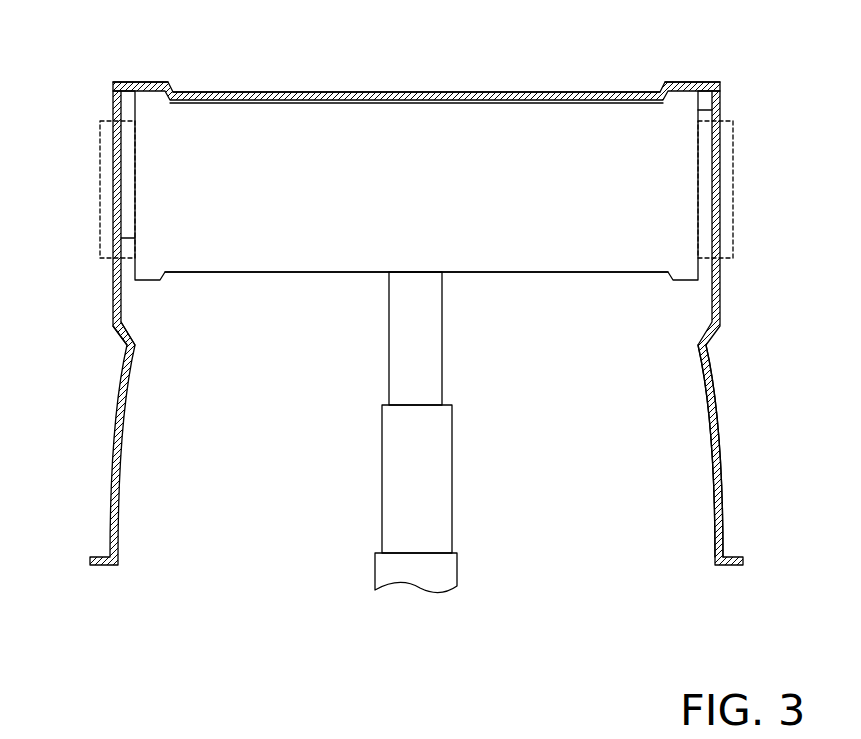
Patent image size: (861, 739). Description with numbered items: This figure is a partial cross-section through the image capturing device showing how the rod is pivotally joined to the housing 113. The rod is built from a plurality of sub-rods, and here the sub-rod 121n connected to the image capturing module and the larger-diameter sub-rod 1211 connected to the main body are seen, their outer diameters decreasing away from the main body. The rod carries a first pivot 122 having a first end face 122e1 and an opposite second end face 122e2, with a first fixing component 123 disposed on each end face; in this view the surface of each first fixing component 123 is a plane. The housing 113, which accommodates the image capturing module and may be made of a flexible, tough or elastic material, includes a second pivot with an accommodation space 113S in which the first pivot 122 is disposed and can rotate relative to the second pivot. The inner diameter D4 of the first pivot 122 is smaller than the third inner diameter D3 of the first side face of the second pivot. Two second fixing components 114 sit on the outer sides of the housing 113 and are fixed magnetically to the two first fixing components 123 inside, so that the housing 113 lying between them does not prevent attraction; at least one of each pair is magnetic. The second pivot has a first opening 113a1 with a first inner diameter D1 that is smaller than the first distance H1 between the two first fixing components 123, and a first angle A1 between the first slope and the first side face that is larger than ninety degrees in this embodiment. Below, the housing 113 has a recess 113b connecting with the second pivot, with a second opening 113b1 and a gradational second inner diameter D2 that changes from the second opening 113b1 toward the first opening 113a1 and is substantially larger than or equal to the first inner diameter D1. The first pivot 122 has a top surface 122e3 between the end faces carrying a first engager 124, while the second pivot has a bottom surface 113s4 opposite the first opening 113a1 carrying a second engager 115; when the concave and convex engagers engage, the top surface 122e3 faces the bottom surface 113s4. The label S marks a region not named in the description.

The housing 113 is at (725, 490).
The recess 113b is at (690, 452).
The second opening 113b1 is at (602, 558).
The first opening 113a1 is at (558, 345).
The accommodation space 113S is at (185, 290).
The bottom surface 113s4 is at (125, 82).
The second fixing component 114 is at (105, 133).
The second engager 115 is at (318, 93).
The first pivot 122 is at (478, 118).
The first end face 122e1 is at (698, 110).
The second end face 122e2 is at (122, 238).
The top surface 122e3 is at (692, 83).
The first fixing component 123 is at (127, 162).
The first engager 124 is at (380, 102).
The sub-rod 121n is at (432, 345).
The sub-rod 1211 is at (432, 478).
The space S is at (96, 189).
The first distance H1 is at (713, 82).
The first inner diameter D1 is at (135, 345).
The second inner diameter D2 is at (118, 565).
The third inner diameter D3 is at (713, 325).
The inner diameter D4 is at (685, 91).
The first angle A1 is at (712, 292).